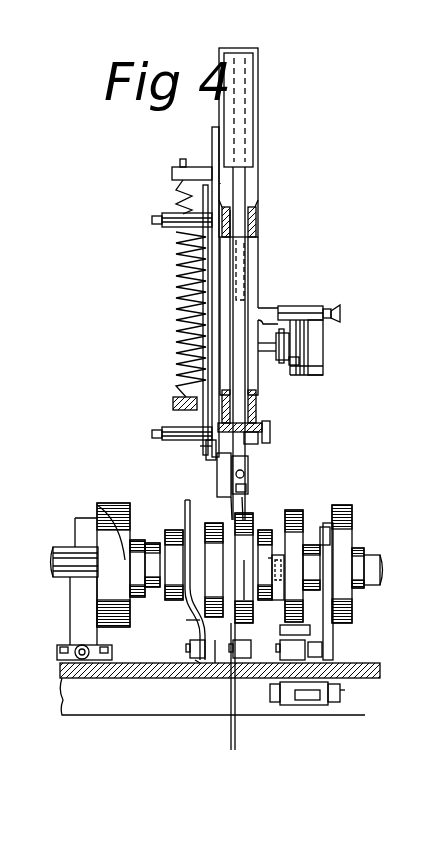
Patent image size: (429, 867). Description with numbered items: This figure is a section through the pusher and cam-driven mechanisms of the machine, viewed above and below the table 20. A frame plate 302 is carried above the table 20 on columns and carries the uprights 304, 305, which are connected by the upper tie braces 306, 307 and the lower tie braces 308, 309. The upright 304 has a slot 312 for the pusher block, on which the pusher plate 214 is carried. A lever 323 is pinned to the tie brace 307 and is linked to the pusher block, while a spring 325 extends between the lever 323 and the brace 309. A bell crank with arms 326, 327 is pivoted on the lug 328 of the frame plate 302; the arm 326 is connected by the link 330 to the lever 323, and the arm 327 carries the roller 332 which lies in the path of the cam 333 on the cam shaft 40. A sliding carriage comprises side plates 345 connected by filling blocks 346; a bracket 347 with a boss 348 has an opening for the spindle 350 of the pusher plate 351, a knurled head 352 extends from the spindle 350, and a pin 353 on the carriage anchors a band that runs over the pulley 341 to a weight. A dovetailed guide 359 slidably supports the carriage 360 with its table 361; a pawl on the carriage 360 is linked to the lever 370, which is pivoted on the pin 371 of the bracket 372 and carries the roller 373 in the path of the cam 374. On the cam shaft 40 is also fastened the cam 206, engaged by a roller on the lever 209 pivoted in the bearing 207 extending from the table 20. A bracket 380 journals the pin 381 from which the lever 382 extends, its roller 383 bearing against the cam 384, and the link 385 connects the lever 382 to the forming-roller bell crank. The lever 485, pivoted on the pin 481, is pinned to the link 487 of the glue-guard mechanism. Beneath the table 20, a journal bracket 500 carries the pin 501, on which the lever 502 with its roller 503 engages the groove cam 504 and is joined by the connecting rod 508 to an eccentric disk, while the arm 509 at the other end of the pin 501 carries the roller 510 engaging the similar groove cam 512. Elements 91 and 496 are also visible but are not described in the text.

The pusher plate 214 is at (259, 83).
The slot 312 is at (247, 118).
The upright 304 is at (253, 176).
The upright 305 is at (222, 183).
The upper tie brace 306 is at (256, 226).
The upper tie brace 307 is at (232, 216).
The pusher plate 351 is at (247, 255).
The spindle 350 is at (268, 312).
The boss 348 is at (300, 308).
The bracket 347 is at (318, 352).
The knurled head 352 is at (340, 312).
The filling block 346 is at (300, 337).
The side plate 345 is at (312, 365).
The pulley 341 is at (283, 352).
The pin 353 is at (292, 362).
The lower tie brace 308 is at (252, 405).
The lower tie brace 309 is at (262, 428).
The lug 328 is at (266, 440).
The frame plate 302 is at (250, 444).
The lever 323 is at (216, 148).
The link 330 is at (205, 292).
The spring 325 is at (178, 340).
The arm 326 is at (200, 428).
The arm 327 is at (200, 446).
The dovetailed guide 359 is at (215, 458).
The carriage 360 is at (218, 472).
The table 361 is at (247, 490).
The lever 370 is at (235, 505).
The lever 209 is at (78, 612).
The cam 206 is at (110, 503).
The gear 91 is at (138, 540).
The gear 496 is at (185, 590).
The bearing 207 is at (65, 652).
The link 487 is at (185, 505).
The roller 332 is at (210, 570).
The cam 333 is at (205, 612).
The pin 481 is at (190, 650).
The cam 374 is at (248, 535).
The roller 373 is at (244, 580).
The link 385 is at (280, 600).
The cam 384 is at (285, 505).
The roller 383 is at (268, 558).
The pin 371 is at (270, 627).
The roller 510 is at (298, 558).
The groove cam 512 is at (318, 576).
The arm 509 is at (305, 624).
The connecting rod 508 is at (320, 535).
The bracket 380 is at (292, 650).
The lever 502 is at (333, 640).
The groove cam 504 is at (350, 520).
The roller 503 is at (350, 560).
The cam shaft 40 is at (380, 562).
The pin 381 is at (325, 650).
The table 20 is at (125, 690).
The lever 485 is at (197, 663).
The bracket 372 is at (215, 663).
The lever 382 is at (258, 663).
The journal bracket 500 is at (335, 705).
The pin 501 is at (340, 690).